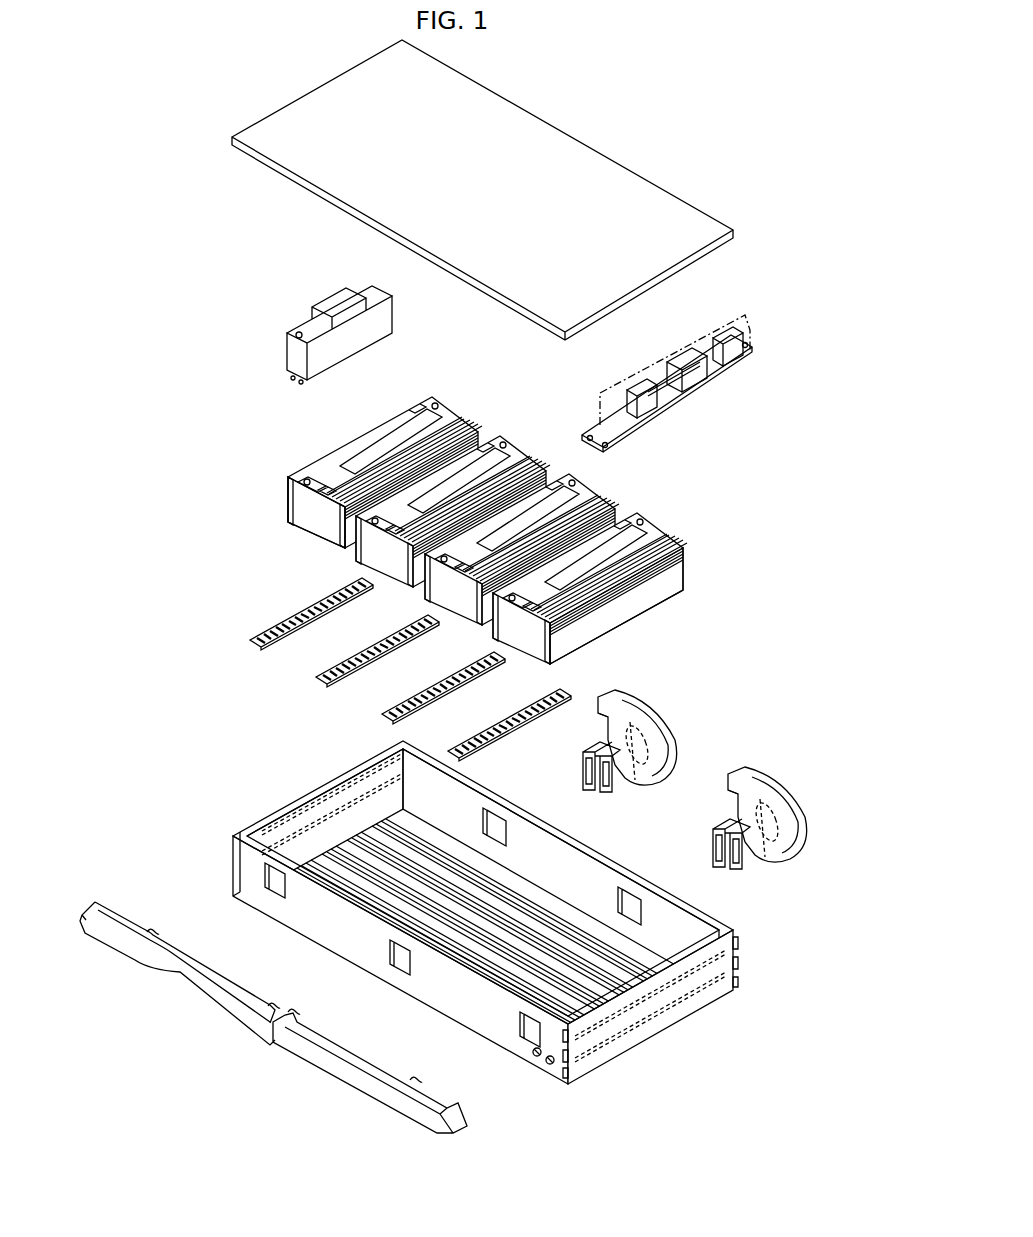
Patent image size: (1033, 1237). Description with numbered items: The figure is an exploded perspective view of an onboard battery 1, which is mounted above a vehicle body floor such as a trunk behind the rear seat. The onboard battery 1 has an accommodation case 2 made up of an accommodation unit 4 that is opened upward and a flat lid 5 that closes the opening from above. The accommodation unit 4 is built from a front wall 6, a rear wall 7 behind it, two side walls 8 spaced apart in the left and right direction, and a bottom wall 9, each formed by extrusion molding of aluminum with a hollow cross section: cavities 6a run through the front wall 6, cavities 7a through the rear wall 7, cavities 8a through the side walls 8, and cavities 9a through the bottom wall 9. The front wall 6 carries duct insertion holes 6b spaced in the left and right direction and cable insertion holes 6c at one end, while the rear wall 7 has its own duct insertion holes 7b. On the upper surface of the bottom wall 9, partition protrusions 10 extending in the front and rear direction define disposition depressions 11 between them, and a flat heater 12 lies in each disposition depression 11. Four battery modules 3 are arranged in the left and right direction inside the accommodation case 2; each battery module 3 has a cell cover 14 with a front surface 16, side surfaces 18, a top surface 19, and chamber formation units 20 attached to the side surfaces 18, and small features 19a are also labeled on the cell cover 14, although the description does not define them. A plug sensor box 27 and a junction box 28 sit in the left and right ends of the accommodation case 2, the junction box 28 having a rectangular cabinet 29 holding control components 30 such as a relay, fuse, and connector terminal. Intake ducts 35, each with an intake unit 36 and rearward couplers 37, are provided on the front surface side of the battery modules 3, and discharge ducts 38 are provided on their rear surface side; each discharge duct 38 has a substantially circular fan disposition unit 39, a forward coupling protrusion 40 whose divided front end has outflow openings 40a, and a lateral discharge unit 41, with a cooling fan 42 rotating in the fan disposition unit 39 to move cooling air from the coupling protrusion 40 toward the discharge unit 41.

The onboard battery 1 is at (147, 53).
The accommodation case 2 is at (192, 280).
The battery module 3 is at (500, 513).
The accommodation unit 4 is at (262, 818).
The lid 5 is at (232, 147).
The front wall 6 is at (435, 995).
The cavity 6a is at (590, 1050).
The duct insertion hole 6b is at (272, 890).
The cable insertion hole 6c is at (537, 1058).
The rear wall 7 is at (525, 897).
The cavity 7a is at (742, 942).
The duct insertion hole 7b is at (508, 818).
The side wall 8 is at (336, 790).
The cavity 8a is at (377, 768).
The bottom wall 9 is at (440, 815).
The cavity 9a is at (545, 855).
The partition protrusion 10 is at (400, 802).
The disposition depression 11 is at (480, 815).
The heater 12 is at (290, 626).
The cell cover 14 is at (368, 432).
The front surface 16 is at (312, 515).
The side surface 18 is at (342, 538).
The top surface 19 is at (318, 470).
The terminal hole 19a is at (440, 404).
The chamber formation unit 20 is at (290, 473).
The plug sensor box 27 is at (305, 330).
The junction box 28 is at (722, 380).
The cabinet 29 is at (680, 353).
The control component 30 is at (722, 328).
The intake duct 35 is at (274, 1013).
The intake unit 36 is at (208, 1008).
The coupler 37 is at (152, 931).
The discharge duct 38 is at (689, 773).
The fan disposition unit 39 is at (660, 732).
The coupling protrusion 40 is at (587, 750).
The outflow opening 40a is at (584, 770).
The discharge unit 41 is at (600, 696).
The cooling fan 42 is at (634, 722).